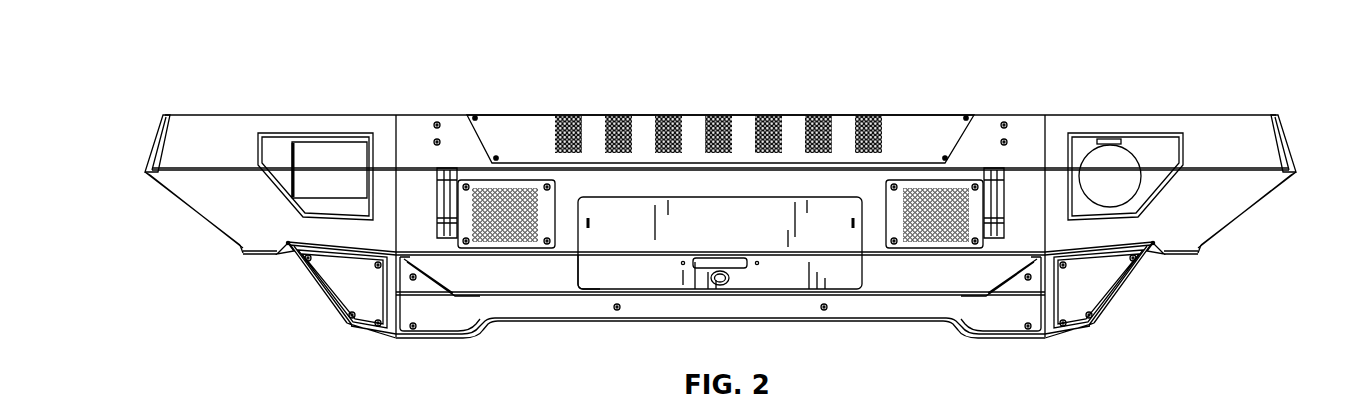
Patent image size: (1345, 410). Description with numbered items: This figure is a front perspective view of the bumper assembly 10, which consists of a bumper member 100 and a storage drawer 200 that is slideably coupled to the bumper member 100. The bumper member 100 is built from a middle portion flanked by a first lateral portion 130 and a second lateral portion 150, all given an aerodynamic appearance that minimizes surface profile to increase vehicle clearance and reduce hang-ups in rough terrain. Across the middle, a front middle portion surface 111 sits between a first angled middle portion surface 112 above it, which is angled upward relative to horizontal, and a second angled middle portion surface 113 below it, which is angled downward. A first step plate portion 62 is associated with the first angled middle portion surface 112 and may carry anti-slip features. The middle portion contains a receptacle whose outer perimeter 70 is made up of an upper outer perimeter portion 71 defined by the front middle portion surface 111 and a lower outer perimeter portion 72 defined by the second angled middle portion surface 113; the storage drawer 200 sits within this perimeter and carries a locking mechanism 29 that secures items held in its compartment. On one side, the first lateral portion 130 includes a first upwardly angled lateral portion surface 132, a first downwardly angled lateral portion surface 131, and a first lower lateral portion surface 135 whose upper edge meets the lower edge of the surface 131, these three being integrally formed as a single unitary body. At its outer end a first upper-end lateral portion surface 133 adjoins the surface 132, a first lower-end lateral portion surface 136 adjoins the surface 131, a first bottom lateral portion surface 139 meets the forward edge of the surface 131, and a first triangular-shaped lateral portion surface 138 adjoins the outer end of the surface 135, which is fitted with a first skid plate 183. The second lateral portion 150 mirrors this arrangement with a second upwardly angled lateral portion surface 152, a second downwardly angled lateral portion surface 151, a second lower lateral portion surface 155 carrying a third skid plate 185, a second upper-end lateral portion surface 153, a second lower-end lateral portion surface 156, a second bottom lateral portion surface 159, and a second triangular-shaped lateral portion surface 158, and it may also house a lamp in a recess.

The bumper assembly 10 is at (301, 71).
The locking mechanism 29 is at (720, 286).
The first step plate portion 62 is at (517, 124).
The outer perimeter 70 is at (787, 194).
The upper outer perimeter portion 71 is at (646, 196).
The lower outer perimeter portion 72 is at (578, 267).
The bumper member 100 is at (427, 353).
The front middle portion surface 111 is at (415, 185).
The first angled middle portion surface 112 is at (458, 128).
The second angled middle portion surface 113 is at (465, 280).
The first lateral portion 130 is at (177, 230).
The first downwardly angled lateral portion surface 131 is at (232, 215).
The first upwardly angled lateral portion surface 132 is at (218, 127).
The first upper-end lateral portion surface 133 is at (157, 137).
The first lower lateral portion surface 135 is at (293, 248).
The first lower-end lateral portion surface 136 is at (153, 180).
The first triangular-shaped lateral portion surface 138 is at (314, 283).
The first bottom lateral portion surface 139 is at (257, 254).
The second lateral portion 150 is at (1247, 243).
The second downwardly angled lateral portion surface 151 is at (1198, 220).
The second upwardly angled lateral portion surface 152 is at (1213, 127).
The second upper-end lateral portion surface 153 is at (1284, 133).
The second lower lateral portion surface 155 is at (1147, 253).
The second lower-end lateral portion surface 156 is at (1270, 197).
The second triangular-shaped lateral portion surface 158 is at (1122, 293).
The second bottom lateral portion surface 159 is at (1181, 253).
The first skid plate 183 is at (365, 308).
The third skid plate 185 is at (1071, 317).
The storage drawer 200 is at (658, 268).